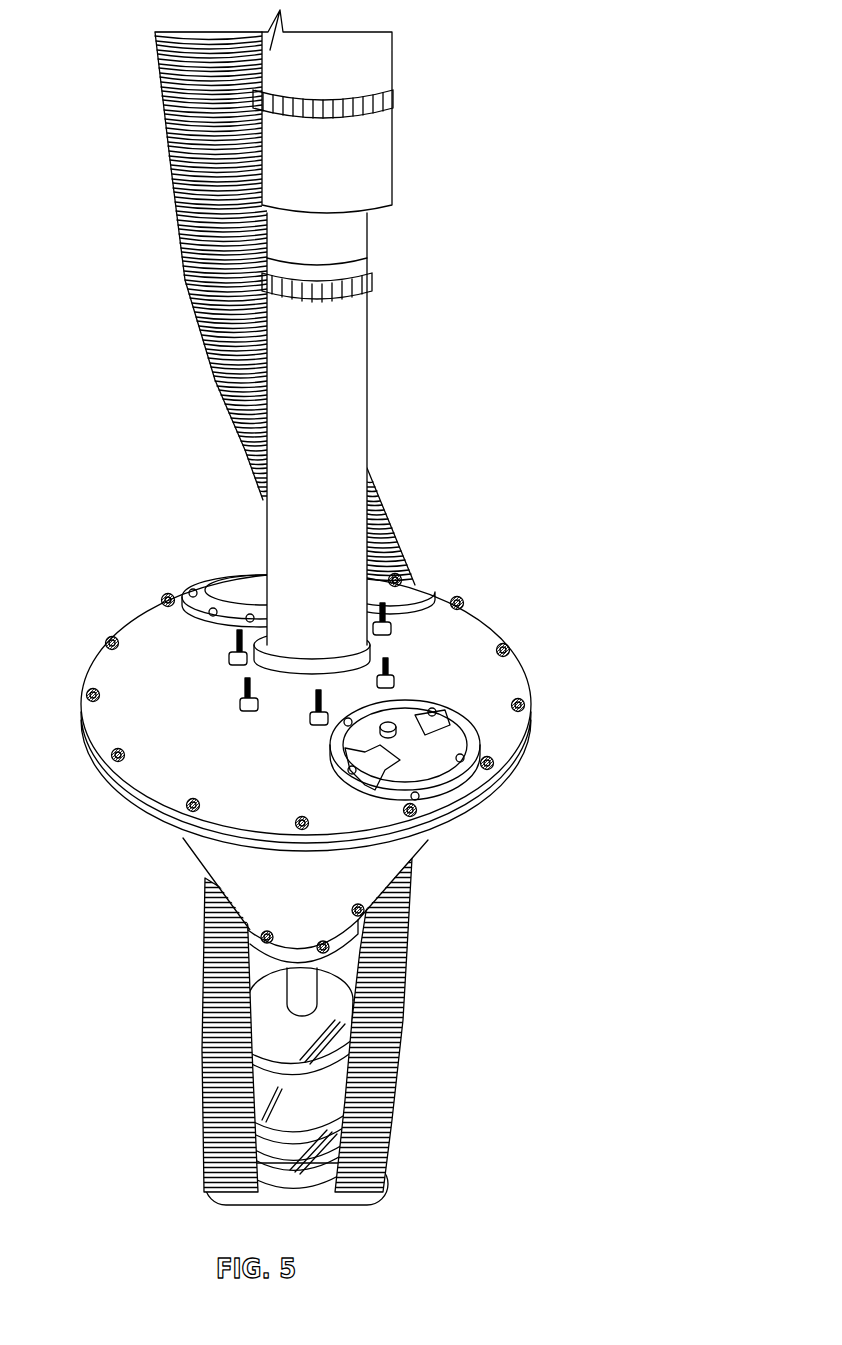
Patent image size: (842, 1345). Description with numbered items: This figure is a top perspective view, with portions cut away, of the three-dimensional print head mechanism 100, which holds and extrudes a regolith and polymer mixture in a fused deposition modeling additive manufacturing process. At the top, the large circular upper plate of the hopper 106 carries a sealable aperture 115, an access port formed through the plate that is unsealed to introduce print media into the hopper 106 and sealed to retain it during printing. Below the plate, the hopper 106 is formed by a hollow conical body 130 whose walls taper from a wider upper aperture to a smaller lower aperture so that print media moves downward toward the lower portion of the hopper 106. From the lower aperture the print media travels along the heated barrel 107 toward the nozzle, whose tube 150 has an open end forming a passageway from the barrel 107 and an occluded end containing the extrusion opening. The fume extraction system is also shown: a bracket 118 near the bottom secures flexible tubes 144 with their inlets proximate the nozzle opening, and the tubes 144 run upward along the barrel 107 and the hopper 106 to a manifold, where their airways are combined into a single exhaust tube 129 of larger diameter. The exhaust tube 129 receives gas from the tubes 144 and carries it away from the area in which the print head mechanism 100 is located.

The 3D print head mechanism 100 is at (610, 563).
The hopper 106 is at (90, 766).
The heated barrel 107 is at (188, 1052).
The sealable aperture 115 is at (540, 708).
The bracket 118 is at (195, 1180).
The exhaust tube 129 is at (160, 140).
The hollow conical body 130 is at (202, 850).
The flexible tubes 144 is at (197, 927).
The tube 150 is at (150, 60).